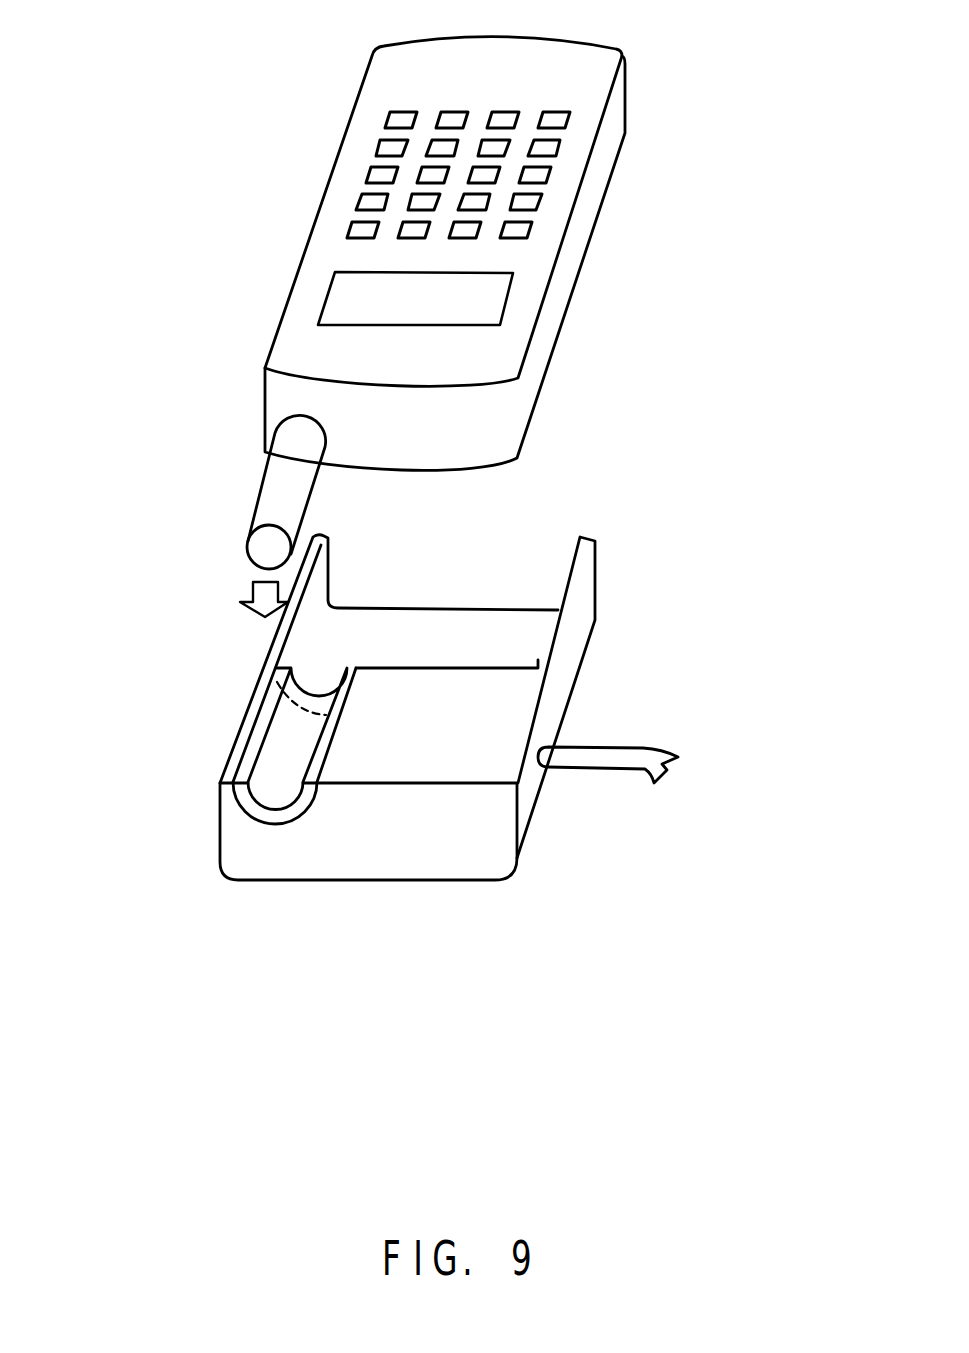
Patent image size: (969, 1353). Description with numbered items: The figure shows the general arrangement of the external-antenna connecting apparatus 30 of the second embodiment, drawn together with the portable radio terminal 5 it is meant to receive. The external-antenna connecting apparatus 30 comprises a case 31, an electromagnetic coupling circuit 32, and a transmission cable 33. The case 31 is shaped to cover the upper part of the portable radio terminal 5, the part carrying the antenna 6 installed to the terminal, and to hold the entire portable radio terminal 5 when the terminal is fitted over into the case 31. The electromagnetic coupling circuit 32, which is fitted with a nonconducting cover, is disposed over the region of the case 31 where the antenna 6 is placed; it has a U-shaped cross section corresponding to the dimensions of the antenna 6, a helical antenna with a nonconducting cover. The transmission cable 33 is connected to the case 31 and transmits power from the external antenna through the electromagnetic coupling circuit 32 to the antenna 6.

The portable radio terminal 5 is at (538, 265).
The antenna 6 is at (275, 497).
The external-antenna connecting apparatus 30 is at (372, 790).
The case 31 is at (562, 685).
The electromagnetic coupling circuit 32 is at (283, 750).
The transmission cable 33 is at (615, 762).